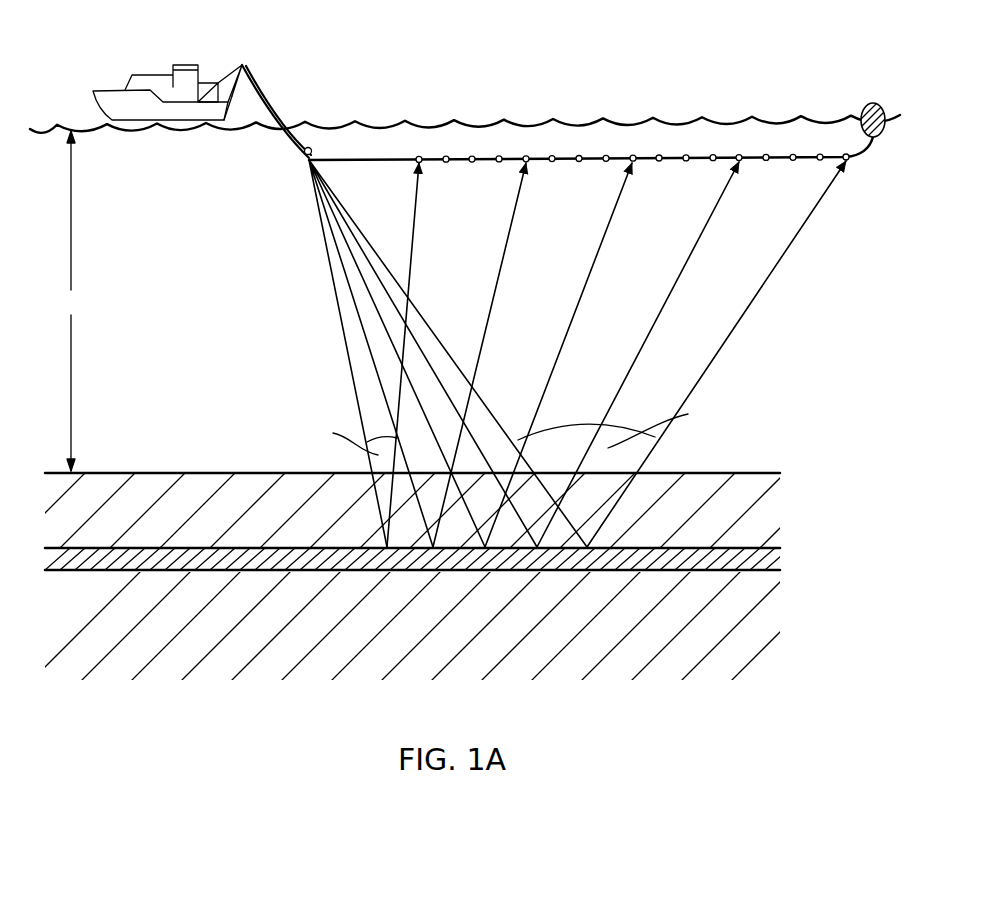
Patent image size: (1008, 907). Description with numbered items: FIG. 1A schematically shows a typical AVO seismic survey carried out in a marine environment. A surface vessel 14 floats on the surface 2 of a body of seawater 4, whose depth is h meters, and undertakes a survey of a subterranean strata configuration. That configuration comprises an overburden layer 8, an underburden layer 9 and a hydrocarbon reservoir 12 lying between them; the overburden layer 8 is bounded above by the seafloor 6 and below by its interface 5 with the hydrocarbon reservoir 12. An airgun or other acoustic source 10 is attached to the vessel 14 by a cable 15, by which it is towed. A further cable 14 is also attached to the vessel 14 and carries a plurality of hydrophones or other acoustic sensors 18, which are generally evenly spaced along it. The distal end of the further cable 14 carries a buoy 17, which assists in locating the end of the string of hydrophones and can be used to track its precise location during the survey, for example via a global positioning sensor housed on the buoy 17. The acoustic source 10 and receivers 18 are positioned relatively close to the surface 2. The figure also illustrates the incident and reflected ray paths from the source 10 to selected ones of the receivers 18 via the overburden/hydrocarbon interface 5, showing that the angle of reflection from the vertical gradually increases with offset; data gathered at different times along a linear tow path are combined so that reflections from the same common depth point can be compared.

The surface 2 is at (470, 122).
The seawater 4 is at (138, 285).
The interface 5 is at (151, 547).
The seafloor 6 is at (208, 472).
The overburden layer 8 is at (763, 513).
The underburden layer 9 is at (770, 617).
The acoustic source 10 is at (309, 147).
The hydrocarbon reservoir 12 is at (773, 562).
The surface vessel 14 is at (148, 72).
The cable 15 is at (253, 82).
The buoy 17 is at (870, 105).
The acoustic sensors 18 is at (636, 145).